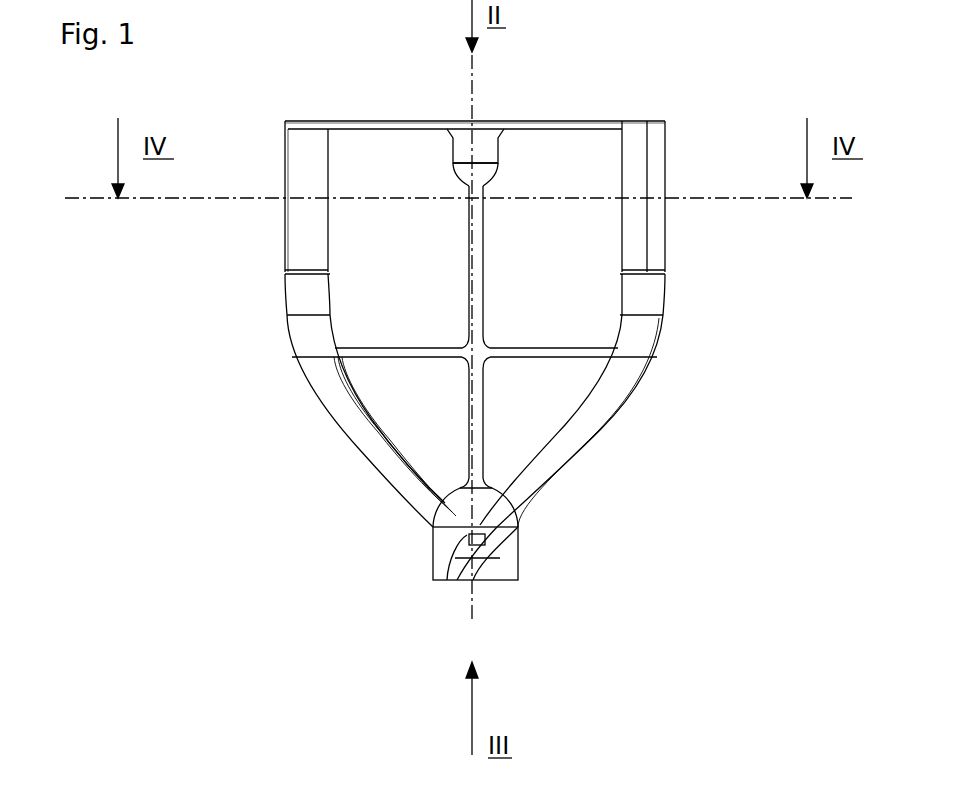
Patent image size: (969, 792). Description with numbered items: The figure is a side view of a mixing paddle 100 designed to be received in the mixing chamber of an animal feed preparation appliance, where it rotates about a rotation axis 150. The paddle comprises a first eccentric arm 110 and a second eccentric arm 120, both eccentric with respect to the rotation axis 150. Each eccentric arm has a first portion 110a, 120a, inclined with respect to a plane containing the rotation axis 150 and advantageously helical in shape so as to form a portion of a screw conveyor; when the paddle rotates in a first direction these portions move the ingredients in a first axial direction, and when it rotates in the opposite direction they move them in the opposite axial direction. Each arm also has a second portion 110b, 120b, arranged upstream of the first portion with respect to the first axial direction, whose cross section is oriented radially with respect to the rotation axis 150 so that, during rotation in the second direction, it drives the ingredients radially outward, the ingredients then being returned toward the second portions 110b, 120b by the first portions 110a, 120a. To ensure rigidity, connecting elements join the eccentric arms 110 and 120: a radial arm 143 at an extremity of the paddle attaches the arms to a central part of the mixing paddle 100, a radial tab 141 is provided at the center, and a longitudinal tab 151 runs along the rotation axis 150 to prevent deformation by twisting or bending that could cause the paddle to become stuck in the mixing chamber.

The mixing paddle 100 is at (464, 336).
The first eccentric arm 110 is at (105, 272).
The first portion of the first eccentric arm 110a is at (283, 421).
The second portion of the first eccentric arm 110b is at (220, 218).
The second eccentric arm 120 is at (817, 292).
The first portion of the second eccentric arm 120a is at (640, 447).
The second portion of the second eccentric arm 120b is at (721, 223).
The radial tab 141 is at (474, 330).
The radial arm 143 is at (542, 98).
The rotation axis 150 is at (393, 552).
The longitudinal tab 151 is at (521, 308).